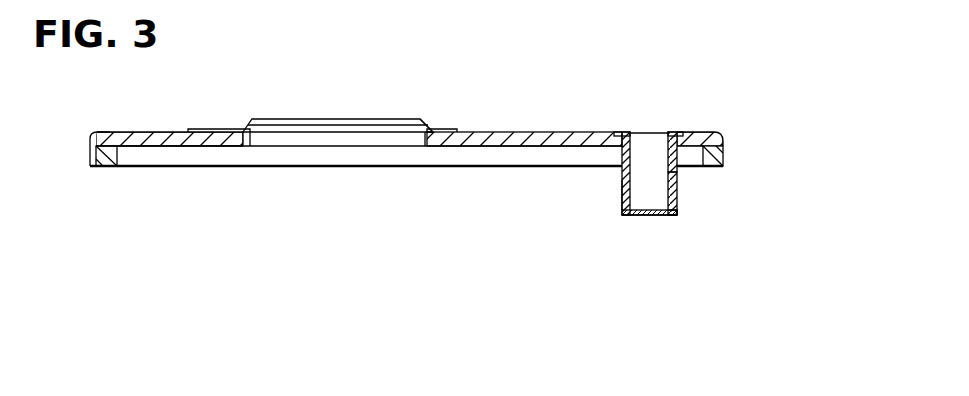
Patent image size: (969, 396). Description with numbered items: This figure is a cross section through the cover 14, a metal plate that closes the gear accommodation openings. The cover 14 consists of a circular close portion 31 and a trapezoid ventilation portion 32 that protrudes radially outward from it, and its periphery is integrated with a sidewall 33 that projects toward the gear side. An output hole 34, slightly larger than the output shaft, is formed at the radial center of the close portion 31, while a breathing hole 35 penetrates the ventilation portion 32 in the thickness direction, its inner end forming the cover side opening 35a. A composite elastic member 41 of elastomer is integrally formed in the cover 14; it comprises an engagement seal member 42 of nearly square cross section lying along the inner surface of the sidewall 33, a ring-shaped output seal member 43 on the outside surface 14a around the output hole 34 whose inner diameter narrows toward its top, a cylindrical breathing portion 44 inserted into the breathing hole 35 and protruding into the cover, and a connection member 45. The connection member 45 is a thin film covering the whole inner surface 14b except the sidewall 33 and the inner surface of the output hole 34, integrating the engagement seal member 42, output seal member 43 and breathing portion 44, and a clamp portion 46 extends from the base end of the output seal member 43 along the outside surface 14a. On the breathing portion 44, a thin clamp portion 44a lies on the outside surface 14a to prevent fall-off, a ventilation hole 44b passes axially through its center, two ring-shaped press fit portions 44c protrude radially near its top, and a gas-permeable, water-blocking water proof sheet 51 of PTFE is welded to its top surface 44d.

The cover 14 is at (527, 128).
The outside surface of the cover 14a is at (588, 132).
The inner surface of the cover 14b is at (569, 149).
The close portion 31 is at (156, 134).
The ventilation portion 32 is at (712, 135).
The sidewall 33 is at (724, 160).
The output hole 34 is at (418, 121).
The breathing hole 35 is at (628, 130).
The cover side opening 35a is at (674, 131).
The composite elastic member 41 is at (187, 148).
The engagement seal member 42 is at (114, 168).
The output seal member 43 is at (320, 125).
The breathing portion 44 is at (678, 192).
The clamp portion 44a is at (678, 131).
The ventilation hole 44b is at (629, 217).
The press fit portions 44c is at (590, 222).
The top surface of the breathing portion 44d is at (672, 217).
The connection member 45 is at (505, 149).
The clamp portion 46 is at (222, 130).
The water proof sheet 51 is at (655, 217).